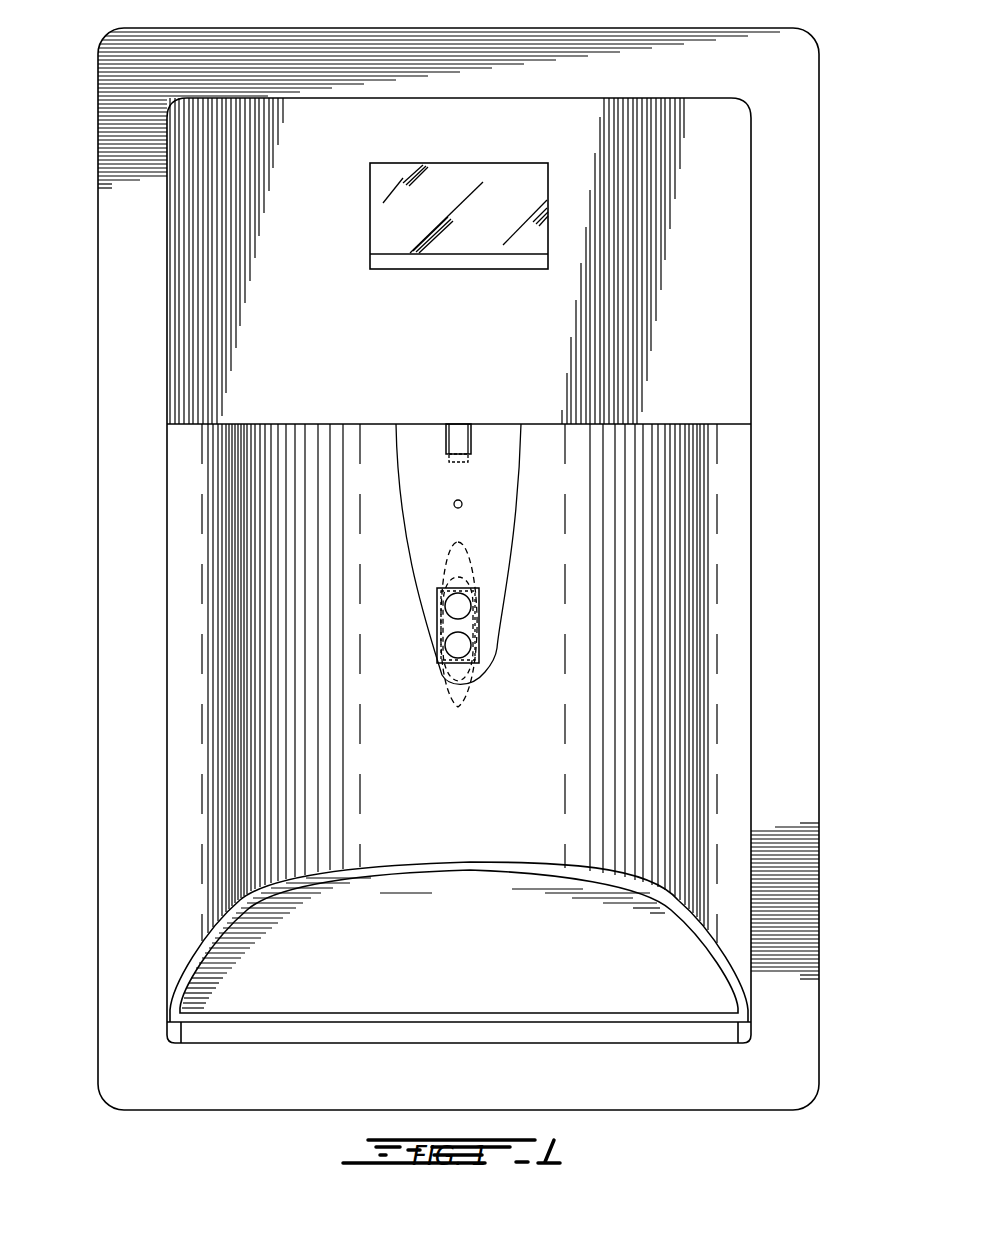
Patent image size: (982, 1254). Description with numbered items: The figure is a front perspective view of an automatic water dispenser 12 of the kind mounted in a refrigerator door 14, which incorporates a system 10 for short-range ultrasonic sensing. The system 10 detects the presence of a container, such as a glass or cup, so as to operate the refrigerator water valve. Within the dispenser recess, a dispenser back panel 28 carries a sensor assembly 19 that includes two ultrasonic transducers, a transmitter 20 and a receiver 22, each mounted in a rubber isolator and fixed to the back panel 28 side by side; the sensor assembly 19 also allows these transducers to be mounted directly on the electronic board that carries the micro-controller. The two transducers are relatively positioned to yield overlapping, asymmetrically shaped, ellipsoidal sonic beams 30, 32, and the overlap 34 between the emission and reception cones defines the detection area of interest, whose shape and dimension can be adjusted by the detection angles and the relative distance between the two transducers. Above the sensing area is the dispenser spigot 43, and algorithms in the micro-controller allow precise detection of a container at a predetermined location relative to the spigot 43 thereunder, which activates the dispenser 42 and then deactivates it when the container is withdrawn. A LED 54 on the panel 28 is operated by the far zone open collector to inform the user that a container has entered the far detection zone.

The automatic water dispenser 12 is at (830, 368).
The refrigerator door 14 is at (793, 722).
The dispenser back panel 28 is at (482, 486).
The receiver 22 is at (442, 672).
The dispenser spigot 43 is at (455, 440).
The dispenser 42 is at (438, 441).
The LED 54 is at (452, 504).
The sonic beam 30 is at (477, 554).
The system for short-range ultrasonic sensing 10 is at (480, 600).
The sensor assembly 19 is at (434, 628).
The transmitter 20 is at (458, 606).
The overlap 34 is at (458, 645).
The sonic beam 32 is at (458, 707).